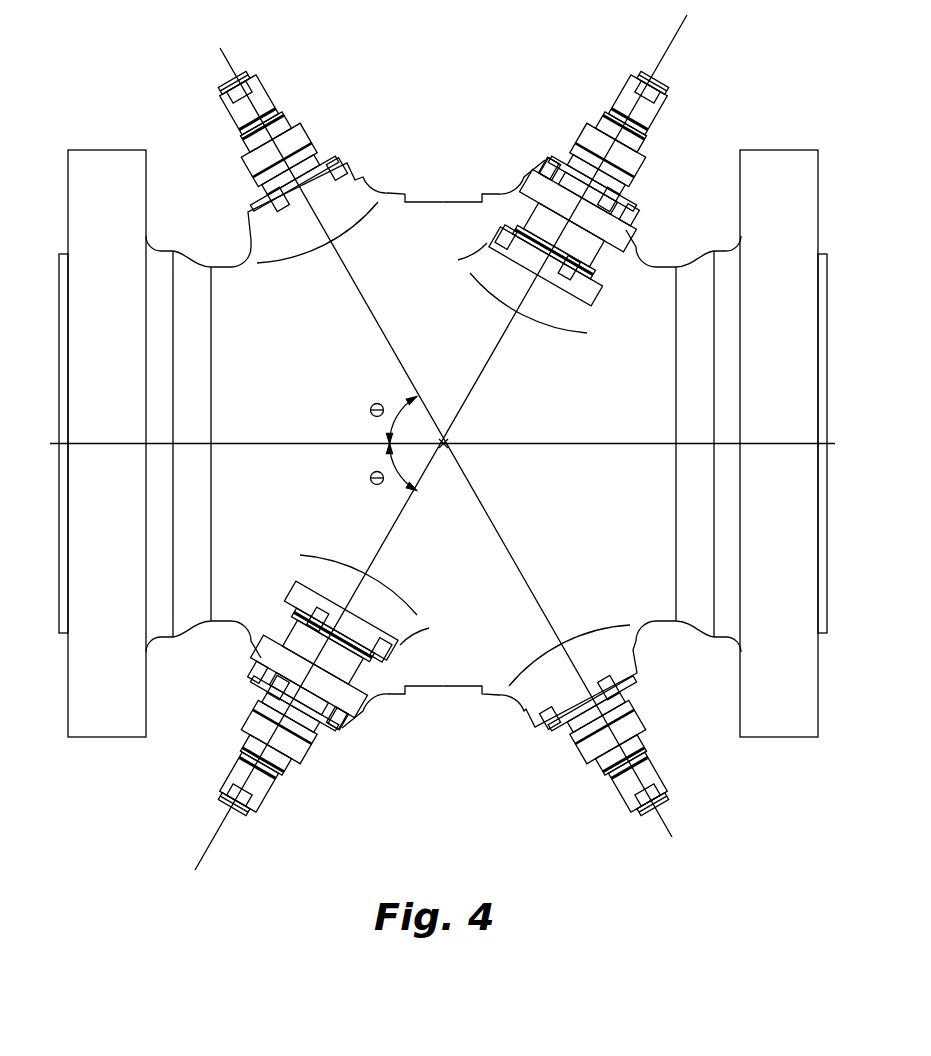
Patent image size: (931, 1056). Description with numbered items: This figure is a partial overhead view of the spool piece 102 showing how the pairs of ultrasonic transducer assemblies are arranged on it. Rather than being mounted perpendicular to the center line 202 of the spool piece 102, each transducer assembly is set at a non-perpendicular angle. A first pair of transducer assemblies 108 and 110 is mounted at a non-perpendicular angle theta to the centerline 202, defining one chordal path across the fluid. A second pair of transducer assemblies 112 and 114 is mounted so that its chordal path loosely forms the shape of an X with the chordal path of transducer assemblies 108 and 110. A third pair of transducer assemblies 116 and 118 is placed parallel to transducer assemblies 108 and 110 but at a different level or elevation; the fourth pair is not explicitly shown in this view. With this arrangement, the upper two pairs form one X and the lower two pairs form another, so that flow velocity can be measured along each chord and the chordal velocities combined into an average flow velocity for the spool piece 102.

The spool piece 102 is at (439, 201).
The center line 202 is at (586, 441).
The transducer assembly 108 is at (290, 598).
The transducer assembly 110 is at (594, 292).
The transducer assembly 112 is at (578, 753).
The transducer assembly 114 is at (302, 138).
The transducer assembly 116 is at (270, 793).
The transducer assembly 118 is at (623, 93).